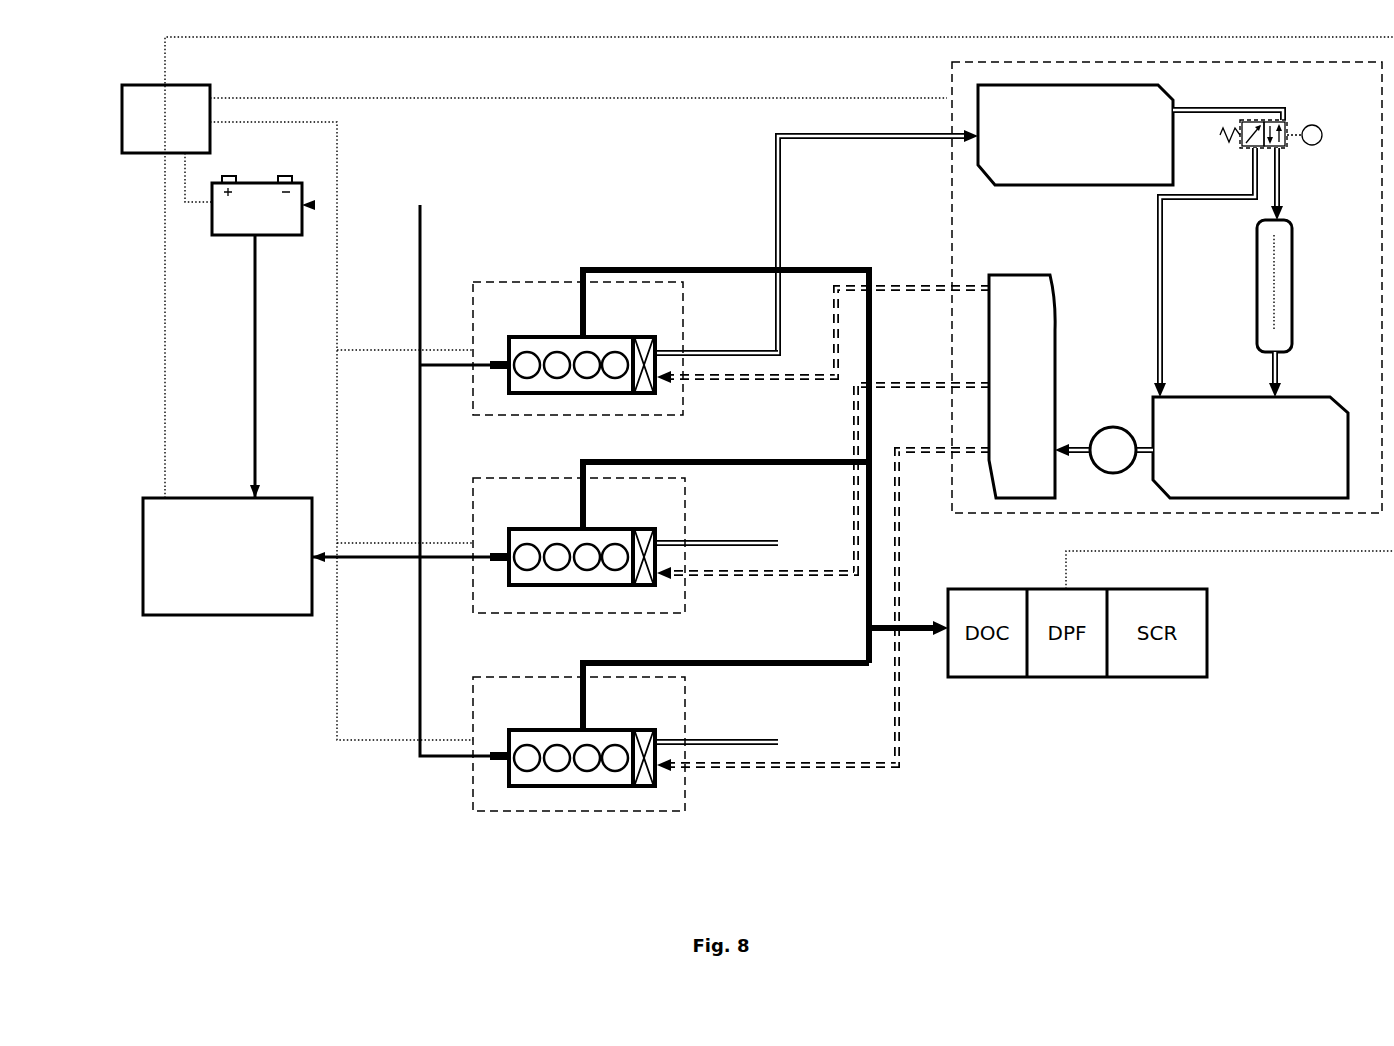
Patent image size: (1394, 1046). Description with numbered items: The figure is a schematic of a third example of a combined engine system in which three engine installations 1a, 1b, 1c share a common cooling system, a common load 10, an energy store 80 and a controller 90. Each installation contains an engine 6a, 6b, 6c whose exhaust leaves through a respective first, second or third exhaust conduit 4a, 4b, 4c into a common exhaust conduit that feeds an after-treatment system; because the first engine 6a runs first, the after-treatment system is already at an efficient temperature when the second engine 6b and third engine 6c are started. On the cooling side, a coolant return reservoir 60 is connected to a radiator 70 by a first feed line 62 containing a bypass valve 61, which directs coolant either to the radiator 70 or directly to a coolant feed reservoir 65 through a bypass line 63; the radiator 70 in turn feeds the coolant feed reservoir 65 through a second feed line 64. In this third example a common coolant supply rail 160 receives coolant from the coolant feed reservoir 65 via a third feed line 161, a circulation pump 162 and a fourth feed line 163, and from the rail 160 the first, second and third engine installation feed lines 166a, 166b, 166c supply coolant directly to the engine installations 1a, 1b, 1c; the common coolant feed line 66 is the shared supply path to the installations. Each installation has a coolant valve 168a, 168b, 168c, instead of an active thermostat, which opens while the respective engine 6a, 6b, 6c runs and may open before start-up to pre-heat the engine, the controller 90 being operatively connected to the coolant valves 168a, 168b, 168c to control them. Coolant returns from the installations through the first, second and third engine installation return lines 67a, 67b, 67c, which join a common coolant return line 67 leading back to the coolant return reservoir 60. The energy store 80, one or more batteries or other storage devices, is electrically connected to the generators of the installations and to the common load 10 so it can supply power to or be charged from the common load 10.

The common load 10 is at (227, 556).
The energy store 80 is at (257, 205).
The controller 90 is at (166, 119).
The first engine installation 1a is at (516, 276).
The second engine installation 1b is at (516, 474).
The third engine installation 1c is at (516, 674).
The first engine 6a is at (572, 337).
The second engine 6b is at (572, 529).
The third engine 6c is at (572, 730).
The coolant valve 168a is at (645, 337).
The coolant valve 168b is at (645, 529).
The coolant valve 168c is at (645, 730).
The first exhaust conduit 4a is at (685, 268).
The second exhaust conduit 4b is at (617, 459).
The third exhaust conduit 4c is at (623, 661).
The first engine installation return line 67a is at (708, 348).
The second engine installation return line 67b is at (708, 540).
The third engine installation return line 67c is at (708, 739).
The first engine installation feed line 166a is at (708, 383).
The second engine installation feed line 166b is at (710, 578).
The third engine installation feed line 166c is at (712, 770).
The common coolant return line 67 is at (838, 140).
The common coolant feed line 66 is at (838, 698).
The coolant return reservoir 60 is at (1075, 135).
The bypass valve 61 is at (1304, 104).
The first feed line 62 is at (1283, 181).
The bypass line 63 is at (1200, 200).
The radiator 70 is at (1295, 272).
The second feed line 64 is at (1280, 368).
The coolant feed reservoir 65 is at (1250, 447).
The common coolant supply rail 160 is at (1022, 386).
The third feed line 161 is at (1142, 447).
The circulation pump 162 is at (1108, 428).
The fourth feed line 163 is at (1078, 457).